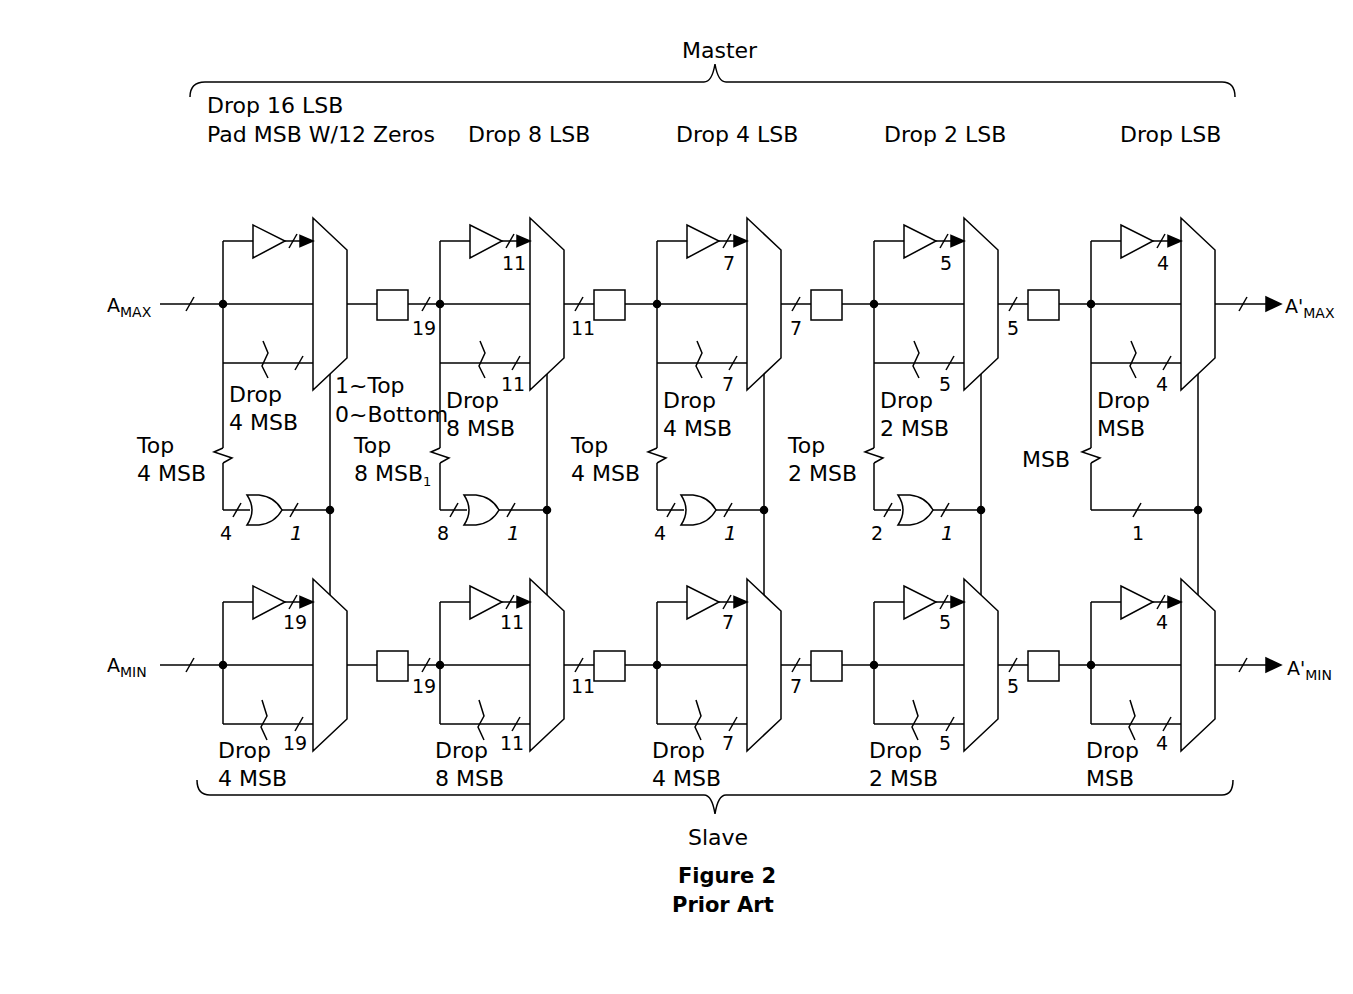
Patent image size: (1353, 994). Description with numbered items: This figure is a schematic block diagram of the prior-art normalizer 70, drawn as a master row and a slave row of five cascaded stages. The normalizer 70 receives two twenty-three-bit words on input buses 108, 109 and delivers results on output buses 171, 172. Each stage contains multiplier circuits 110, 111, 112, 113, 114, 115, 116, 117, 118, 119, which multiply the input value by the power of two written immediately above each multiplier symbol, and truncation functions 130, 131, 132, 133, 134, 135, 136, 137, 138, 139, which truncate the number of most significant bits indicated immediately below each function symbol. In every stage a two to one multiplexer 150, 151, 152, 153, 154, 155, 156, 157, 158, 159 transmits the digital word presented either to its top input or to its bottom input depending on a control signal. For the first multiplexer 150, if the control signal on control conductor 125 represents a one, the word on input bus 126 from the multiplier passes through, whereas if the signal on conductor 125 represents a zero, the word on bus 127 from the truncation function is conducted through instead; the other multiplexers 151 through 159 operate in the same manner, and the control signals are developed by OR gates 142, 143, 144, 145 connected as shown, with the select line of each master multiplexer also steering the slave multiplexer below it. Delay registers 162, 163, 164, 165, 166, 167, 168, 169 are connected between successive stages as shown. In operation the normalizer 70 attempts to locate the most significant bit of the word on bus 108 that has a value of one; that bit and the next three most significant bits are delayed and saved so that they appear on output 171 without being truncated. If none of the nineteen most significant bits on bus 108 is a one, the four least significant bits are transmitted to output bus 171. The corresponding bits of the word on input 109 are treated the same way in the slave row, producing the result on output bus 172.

The normalizer 70 is at (894, 56).
The input bus 108 is at (181, 303).
The input bus 109 is at (178, 660).
The multiplier circuit 110 is at (273, 232).
The multiplier circuit 111 is at (251, 592).
The multiplier circuit 112 is at (505, 208).
The multiplier circuit 113 is at (447, 588).
The multiplier circuit 114 is at (722, 217).
The multiplier circuit 115 is at (664, 588).
The multiplier circuit 116 is at (939, 217).
The multiplier circuit 117 is at (881, 588).
The multiplier circuit 118 is at (1156, 217).
The multiplier circuit 119 is at (1098, 588).
The control conductor 125 is at (330, 432).
The input bus 126 is at (288, 243).
The bus 127 is at (290, 357).
The truncation function 130 is at (268, 347).
The truncation function 131 is at (485, 343).
The truncation function 132 is at (702, 343).
The truncation function 133 is at (919, 343).
The truncation function 134 is at (1136, 343).
The truncation function 135 is at (262, 702).
The truncation function 136 is at (485, 708).
The truncation function 137 is at (702, 708).
The truncation function 138 is at (919, 708).
The truncation function 139 is at (1136, 708).
The OR gate 142 is at (267, 499).
The OR gate 143 is at (487, 492).
The OR gate 144 is at (704, 492).
The OR gate 145 is at (921, 492).
The two to one multiplexer 150 is at (333, 232).
The two to one multiplexer 151 is at (311, 647).
The two to one multiplexer 152 is at (573, 282).
The two to one multiplexer 153 is at (515, 665).
The two to one multiplexer 154 is at (790, 282).
The two to one multiplexer 155 is at (732, 665).
The two to one multiplexer 156 is at (1007, 282).
The two to one multiplexer 157 is at (949, 665).
The two to one multiplexer 158 is at (1224, 282).
The two to one multiplexer 159 is at (1166, 665).
The delay register 162 is at (391, 290).
The delay register 163 is at (390, 650).
The delay register 164 is at (620, 271).
The delay register 165 is at (607, 640).
The delay register 166 is at (837, 271).
The delay register 167 is at (824, 640).
The delay register 168 is at (1054, 271).
The delay register 169 is at (1041, 640).
The output bus 171 is at (1248, 289).
The output bus 172 is at (1251, 704).